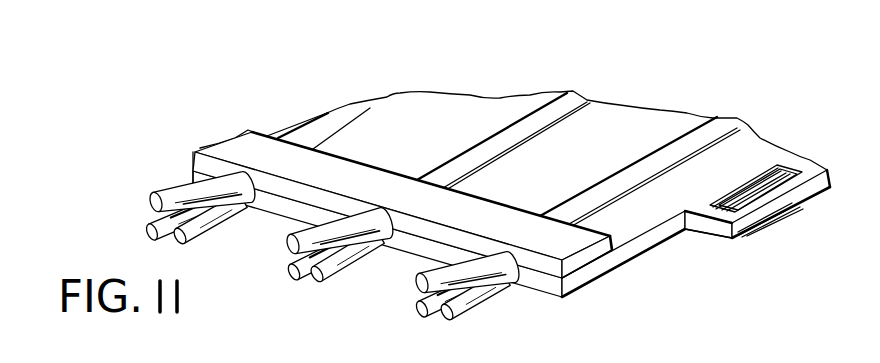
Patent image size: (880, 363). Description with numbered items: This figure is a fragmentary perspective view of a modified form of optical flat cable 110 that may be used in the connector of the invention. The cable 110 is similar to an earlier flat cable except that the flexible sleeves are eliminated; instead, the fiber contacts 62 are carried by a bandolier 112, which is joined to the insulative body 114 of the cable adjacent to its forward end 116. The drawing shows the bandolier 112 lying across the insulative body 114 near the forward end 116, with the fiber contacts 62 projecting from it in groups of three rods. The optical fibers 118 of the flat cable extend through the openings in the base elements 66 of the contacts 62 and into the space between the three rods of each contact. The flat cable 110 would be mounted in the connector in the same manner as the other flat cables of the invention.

The optical flat cable 110 is at (530, 85).
The bandolier 112 is at (568, 245).
The insulative body 114 is at (660, 210).
The forward end 116 is at (553, 287).
The optical fibers 118 is at (150, 224).
The fiber contacts 62 is at (343, 245).
The base elements 66 is at (380, 222).